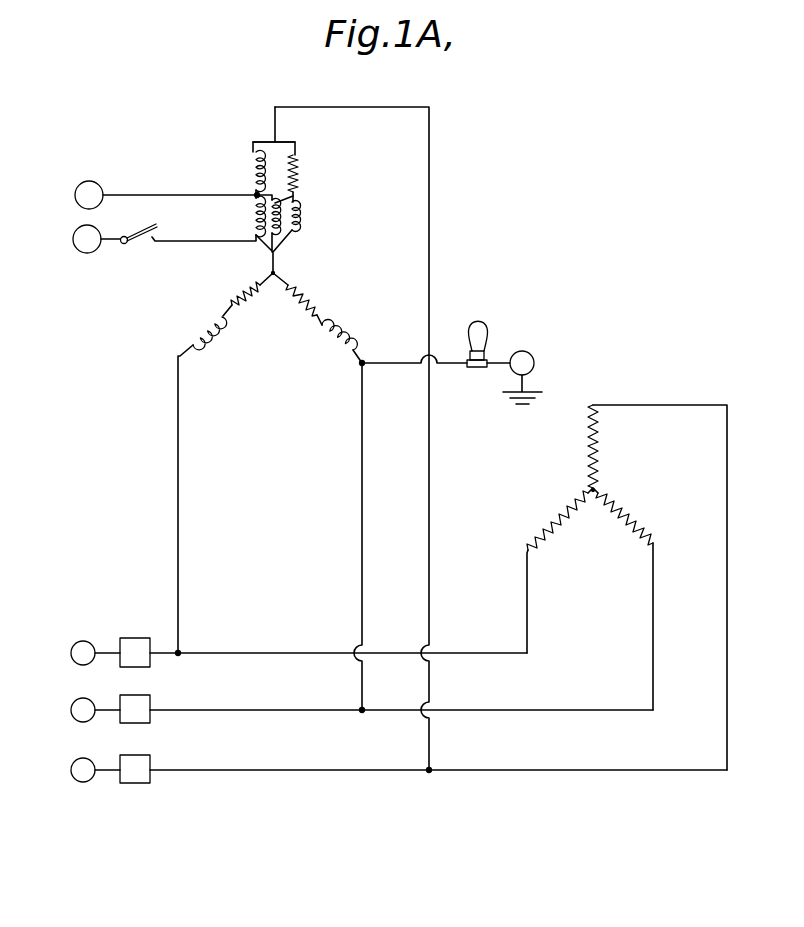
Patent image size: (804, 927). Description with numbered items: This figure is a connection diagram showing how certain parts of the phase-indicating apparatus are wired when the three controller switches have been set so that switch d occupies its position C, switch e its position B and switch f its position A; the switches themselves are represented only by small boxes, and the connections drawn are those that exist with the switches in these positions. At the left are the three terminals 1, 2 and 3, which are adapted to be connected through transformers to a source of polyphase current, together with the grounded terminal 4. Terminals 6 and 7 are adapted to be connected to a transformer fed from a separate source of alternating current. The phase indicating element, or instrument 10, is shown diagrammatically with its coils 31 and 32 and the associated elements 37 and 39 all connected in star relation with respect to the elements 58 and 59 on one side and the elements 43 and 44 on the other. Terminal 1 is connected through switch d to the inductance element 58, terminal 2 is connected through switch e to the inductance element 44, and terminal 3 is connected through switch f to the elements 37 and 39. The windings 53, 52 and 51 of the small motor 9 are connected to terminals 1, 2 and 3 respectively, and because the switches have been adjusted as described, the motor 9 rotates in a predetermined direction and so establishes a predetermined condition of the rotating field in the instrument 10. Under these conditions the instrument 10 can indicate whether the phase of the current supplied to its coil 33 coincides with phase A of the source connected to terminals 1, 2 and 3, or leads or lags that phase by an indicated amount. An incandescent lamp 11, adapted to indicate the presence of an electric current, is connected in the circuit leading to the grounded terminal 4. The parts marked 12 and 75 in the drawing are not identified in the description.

The terminal 1 is at (284, 653).
The terminal 2 is at (347, 710).
The terminal 3 is at (384, 770).
The grounded terminal 4 is at (534, 356).
The terminal 6 is at (90, 181).
The terminal 7 is at (82, 253).
The small motor 9 is at (594, 524).
The phase indicating element 10 is at (270, 190).
The incandescent lamp 11 is at (488, 331).
The switch 12 is at (147, 246).
The coil 31 is at (249, 245).
The coil 32 is at (299, 220).
The coil 33 is at (295, 197).
The associated element 37 is at (250, 163).
The associated element 39 is at (300, 174).
The element 43 is at (308, 295).
The inductance element 44 is at (340, 332).
The motor winding 51 is at (630, 514).
The motor winding 52 is at (601, 450).
The motor winding 53 is at (568, 508).
The inductance element 58 is at (203, 331).
The element 59 is at (236, 298).
The junction point 75 is at (277, 274).
The switch position A / phase A is at (150, 755).
The switch position B is at (150, 696).
The switch position C is at (125, 637).